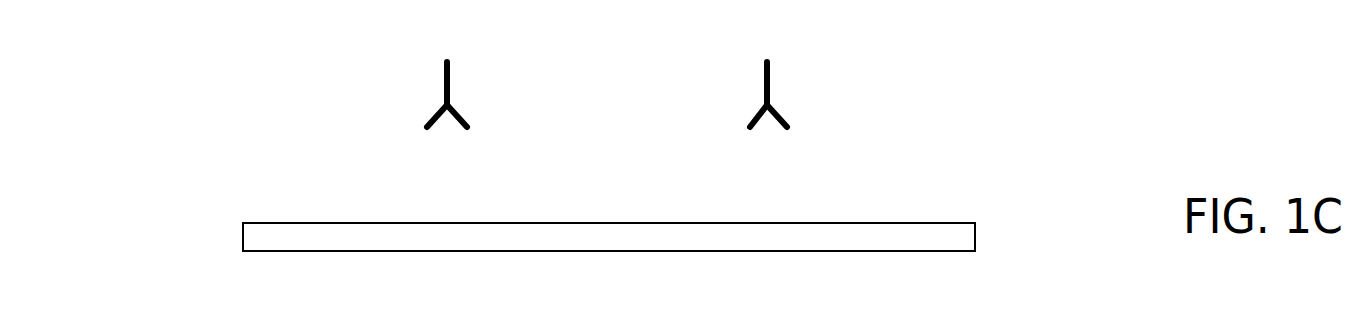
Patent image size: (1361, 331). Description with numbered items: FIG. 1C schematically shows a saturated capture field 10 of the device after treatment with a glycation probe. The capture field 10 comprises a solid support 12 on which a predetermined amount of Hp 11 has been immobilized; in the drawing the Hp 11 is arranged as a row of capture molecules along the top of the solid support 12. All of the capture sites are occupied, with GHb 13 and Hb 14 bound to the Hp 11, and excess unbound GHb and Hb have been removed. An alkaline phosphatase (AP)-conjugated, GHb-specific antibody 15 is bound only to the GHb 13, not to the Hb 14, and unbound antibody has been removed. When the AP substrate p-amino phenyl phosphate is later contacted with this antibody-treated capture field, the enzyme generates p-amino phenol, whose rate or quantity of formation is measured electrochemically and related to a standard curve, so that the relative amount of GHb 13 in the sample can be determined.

The capture field 10 is at (188, 207).
The Hp 11 is at (923, 192).
The solid support 12 is at (998, 232).
The GHb 13 is at (810, 137).
The Hb 14 is at (915, 137).
The alkaline phosphatase (AP)-conjugated, GHb-specific antibody 15 is at (812, 78).